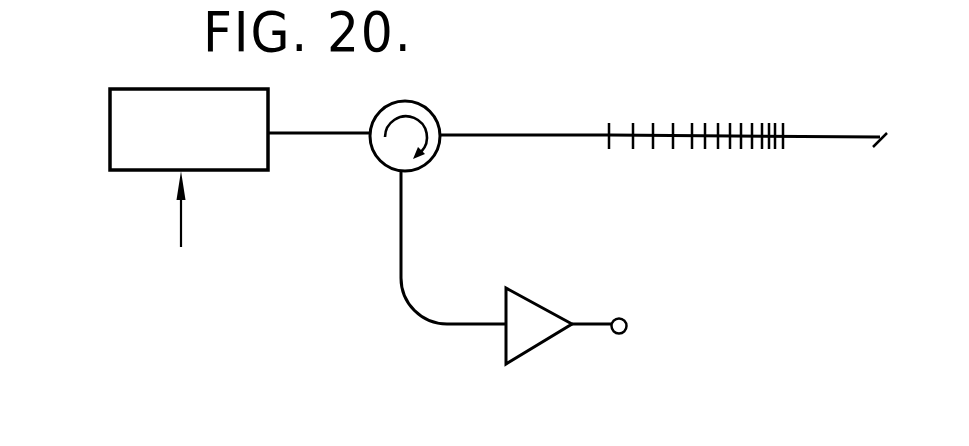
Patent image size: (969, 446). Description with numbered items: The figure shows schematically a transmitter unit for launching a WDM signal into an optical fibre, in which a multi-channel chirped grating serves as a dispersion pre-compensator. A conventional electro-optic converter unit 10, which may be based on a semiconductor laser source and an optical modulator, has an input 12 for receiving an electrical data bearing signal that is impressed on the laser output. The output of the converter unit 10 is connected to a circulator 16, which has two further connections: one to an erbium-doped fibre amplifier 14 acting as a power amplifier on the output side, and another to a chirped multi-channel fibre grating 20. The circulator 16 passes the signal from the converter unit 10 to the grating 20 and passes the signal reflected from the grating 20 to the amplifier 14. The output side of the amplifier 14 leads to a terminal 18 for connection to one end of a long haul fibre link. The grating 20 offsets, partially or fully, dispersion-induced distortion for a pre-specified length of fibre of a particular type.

The electro-optic converter unit 10 is at (110, 106).
The input 12 is at (180, 216).
The erbium-doped fibre amplifier 14 is at (541, 347).
The circulator 16 is at (428, 110).
The terminal 18 is at (626, 318).
The chirped multi-channel fibre grating 20 is at (692, 124).